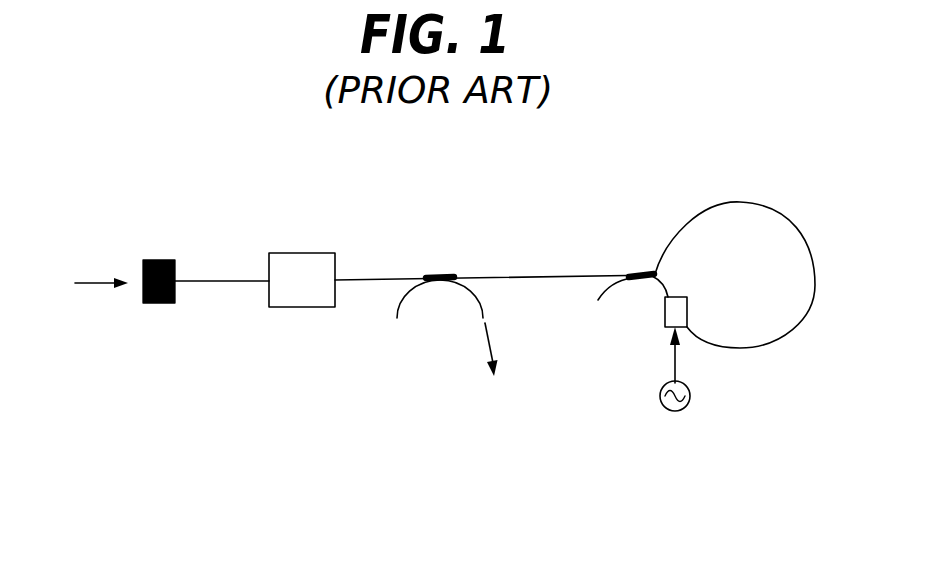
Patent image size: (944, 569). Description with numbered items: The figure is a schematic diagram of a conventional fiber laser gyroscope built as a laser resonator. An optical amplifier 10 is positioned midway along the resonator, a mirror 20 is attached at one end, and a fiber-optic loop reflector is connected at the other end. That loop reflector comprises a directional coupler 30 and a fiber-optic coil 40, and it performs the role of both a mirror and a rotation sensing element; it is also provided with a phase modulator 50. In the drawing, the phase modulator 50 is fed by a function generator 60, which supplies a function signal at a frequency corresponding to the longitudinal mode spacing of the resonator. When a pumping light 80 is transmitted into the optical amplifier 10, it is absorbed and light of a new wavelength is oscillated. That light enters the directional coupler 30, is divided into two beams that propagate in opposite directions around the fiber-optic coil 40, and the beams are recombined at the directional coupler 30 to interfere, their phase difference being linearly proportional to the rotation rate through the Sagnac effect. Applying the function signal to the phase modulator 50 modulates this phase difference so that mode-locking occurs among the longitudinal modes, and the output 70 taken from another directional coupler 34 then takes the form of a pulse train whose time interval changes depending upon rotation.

The optical amplifier 10 is at (296, 253).
The mirror 20 is at (155, 303).
The directional coupler 30 is at (640, 270).
The directional coupler 34 is at (442, 273).
The fiber-optic coil 40 is at (737, 200).
The phase modulator 50 is at (665, 311).
The modulation signal oscillator 60 is at (690, 395).
The output 70 is at (487, 332).
The pumping light 80 is at (98, 277).